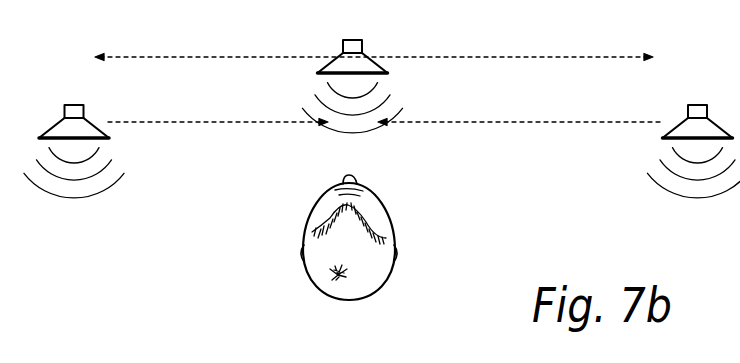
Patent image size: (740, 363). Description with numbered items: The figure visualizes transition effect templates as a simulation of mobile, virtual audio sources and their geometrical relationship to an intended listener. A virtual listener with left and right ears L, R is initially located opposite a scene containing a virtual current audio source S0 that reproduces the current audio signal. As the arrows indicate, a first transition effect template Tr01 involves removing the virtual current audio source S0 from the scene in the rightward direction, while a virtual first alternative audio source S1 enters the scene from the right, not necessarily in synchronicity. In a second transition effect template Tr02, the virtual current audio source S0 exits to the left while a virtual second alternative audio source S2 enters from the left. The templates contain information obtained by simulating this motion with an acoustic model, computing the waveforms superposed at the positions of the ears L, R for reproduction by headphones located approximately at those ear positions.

The virtual current audio source S0 is at (353, 70).
The virtual first alternative audio source S1 is at (694, 135).
The virtual second alternative audio source S2 is at (74, 135).
The first transition effect template Tr01 is at (594, 58).
The second transition effect template Tr02 is at (248, 57).
The left ear L is at (288, 249).
The right ear R is at (411, 249).